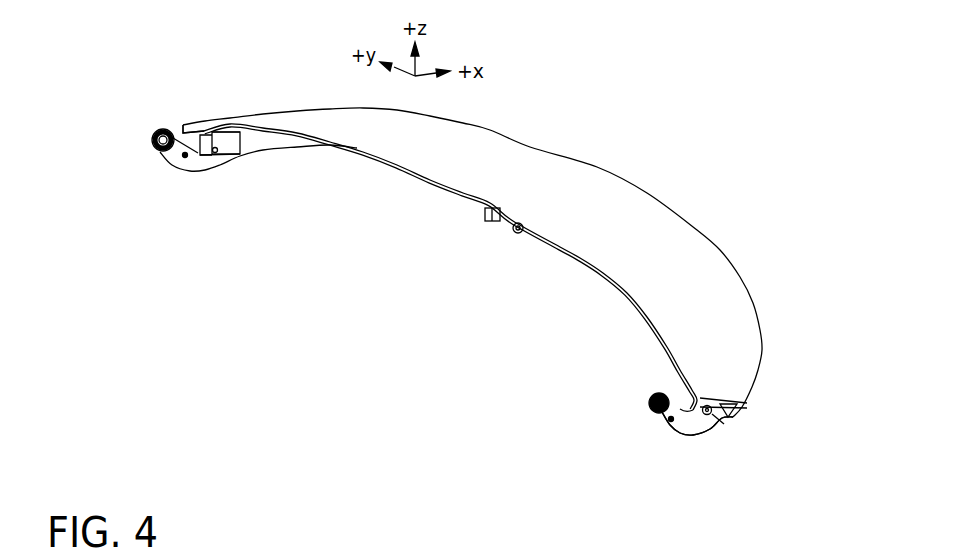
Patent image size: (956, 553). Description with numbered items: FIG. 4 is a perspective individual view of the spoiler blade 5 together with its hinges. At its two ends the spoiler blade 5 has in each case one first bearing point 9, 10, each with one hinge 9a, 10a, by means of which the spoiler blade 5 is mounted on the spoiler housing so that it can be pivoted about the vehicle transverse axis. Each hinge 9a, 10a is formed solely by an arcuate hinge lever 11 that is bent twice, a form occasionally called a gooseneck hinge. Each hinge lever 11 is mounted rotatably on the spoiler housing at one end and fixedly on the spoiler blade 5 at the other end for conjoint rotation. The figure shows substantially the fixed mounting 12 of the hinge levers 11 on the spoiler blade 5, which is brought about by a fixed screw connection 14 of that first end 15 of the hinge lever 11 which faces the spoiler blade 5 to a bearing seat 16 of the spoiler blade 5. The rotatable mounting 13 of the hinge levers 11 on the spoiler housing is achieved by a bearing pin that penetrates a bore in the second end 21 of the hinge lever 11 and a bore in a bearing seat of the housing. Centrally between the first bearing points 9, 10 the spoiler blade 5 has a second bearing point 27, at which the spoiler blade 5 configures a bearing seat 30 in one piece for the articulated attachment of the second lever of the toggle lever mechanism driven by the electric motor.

The spoiler blade 5 is at (563, 192).
The first bearing point 9 is at (697, 452).
The hinge 9a is at (697, 423).
The first bearing point 10 is at (181, 90).
The hinge 10a is at (193, 129).
The hinge lever 11 is at (185, 157).
The fixed mounting 12 is at (235, 170).
The rotatable mounting 13 is at (144, 114).
The fixed screw connection 14 is at (713, 410).
The first end 15 is at (479, 270).
The bearing seat 16 is at (229, 119).
The second end 21 is at (408, 269).
The second bearing point 27 is at (510, 257).
The bearing seat 30 is at (502, 223).